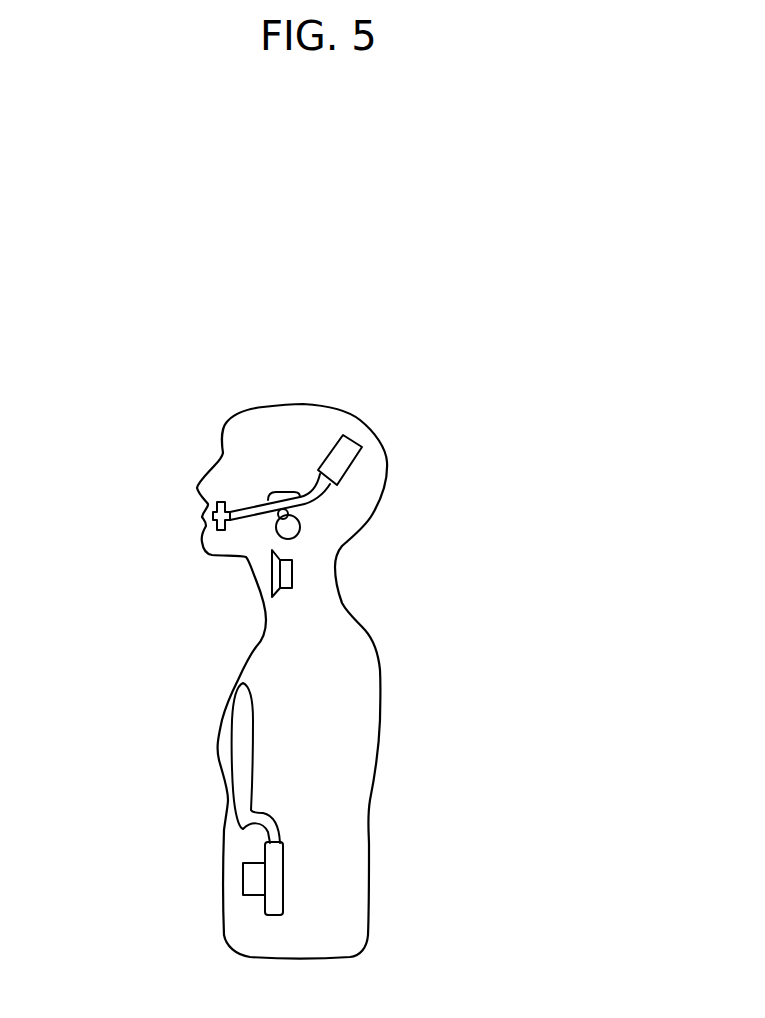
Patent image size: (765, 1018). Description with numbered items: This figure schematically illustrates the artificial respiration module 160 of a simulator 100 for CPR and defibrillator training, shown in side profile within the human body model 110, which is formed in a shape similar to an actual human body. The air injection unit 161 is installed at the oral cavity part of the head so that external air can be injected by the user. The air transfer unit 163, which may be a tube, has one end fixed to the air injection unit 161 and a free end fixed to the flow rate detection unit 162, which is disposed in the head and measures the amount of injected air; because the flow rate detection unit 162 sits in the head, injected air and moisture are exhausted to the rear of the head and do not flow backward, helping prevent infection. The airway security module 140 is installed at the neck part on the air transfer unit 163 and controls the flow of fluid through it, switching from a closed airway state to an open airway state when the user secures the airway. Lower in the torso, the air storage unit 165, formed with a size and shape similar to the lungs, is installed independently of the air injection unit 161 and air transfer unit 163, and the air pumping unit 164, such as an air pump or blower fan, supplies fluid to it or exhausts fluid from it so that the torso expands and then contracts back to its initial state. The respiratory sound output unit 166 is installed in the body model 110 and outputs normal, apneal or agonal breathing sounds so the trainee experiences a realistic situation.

The simulator 100 is at (192, 356).
The human body model 110 is at (343, 401).
The airway security module 140 is at (300, 518).
The artificial respiration module 160 is at (121, 463).
The air injection unit 161 is at (213, 516).
The flow rate detection unit 162 is at (323, 459).
The air transfer unit 163 is at (278, 512).
The air pumping unit 164 is at (270, 853).
The air storage unit 165 is at (242, 698).
The respiratory sound output unit 166 is at (272, 582).